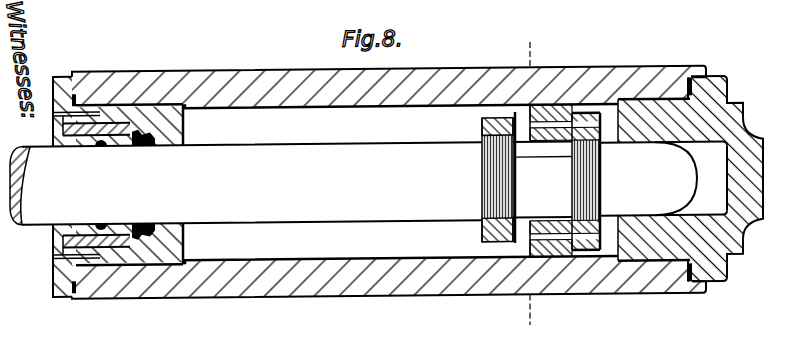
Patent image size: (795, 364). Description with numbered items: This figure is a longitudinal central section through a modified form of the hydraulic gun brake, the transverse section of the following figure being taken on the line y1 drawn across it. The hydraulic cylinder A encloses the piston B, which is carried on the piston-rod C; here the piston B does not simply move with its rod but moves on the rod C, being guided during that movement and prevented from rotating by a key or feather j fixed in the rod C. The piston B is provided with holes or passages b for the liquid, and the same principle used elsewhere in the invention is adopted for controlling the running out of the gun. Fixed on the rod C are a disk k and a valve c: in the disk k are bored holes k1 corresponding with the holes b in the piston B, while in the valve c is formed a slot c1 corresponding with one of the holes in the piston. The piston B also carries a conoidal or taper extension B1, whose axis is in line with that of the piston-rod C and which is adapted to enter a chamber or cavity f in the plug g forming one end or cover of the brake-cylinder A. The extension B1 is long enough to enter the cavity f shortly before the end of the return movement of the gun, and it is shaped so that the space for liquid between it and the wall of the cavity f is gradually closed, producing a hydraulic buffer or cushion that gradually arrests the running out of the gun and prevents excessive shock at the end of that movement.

The hydraulic cylinder A is at (389, 186).
The piston B is at (562, 261).
The conoidal or taper extension B1 is at (675, 178).
The piston-rod C is at (291, 183).
The holes or passages b is at (522, 181).
The valve c is at (497, 180).
The slot c1 is at (484, 125).
The chamber or cavity f is at (716, 178).
The plug g is at (761, 178).
The key or feather j is at (527, 165).
The disk k is at (603, 141).
The holes k1 is at (602, 124).
The section line y1 is at (530, 187).